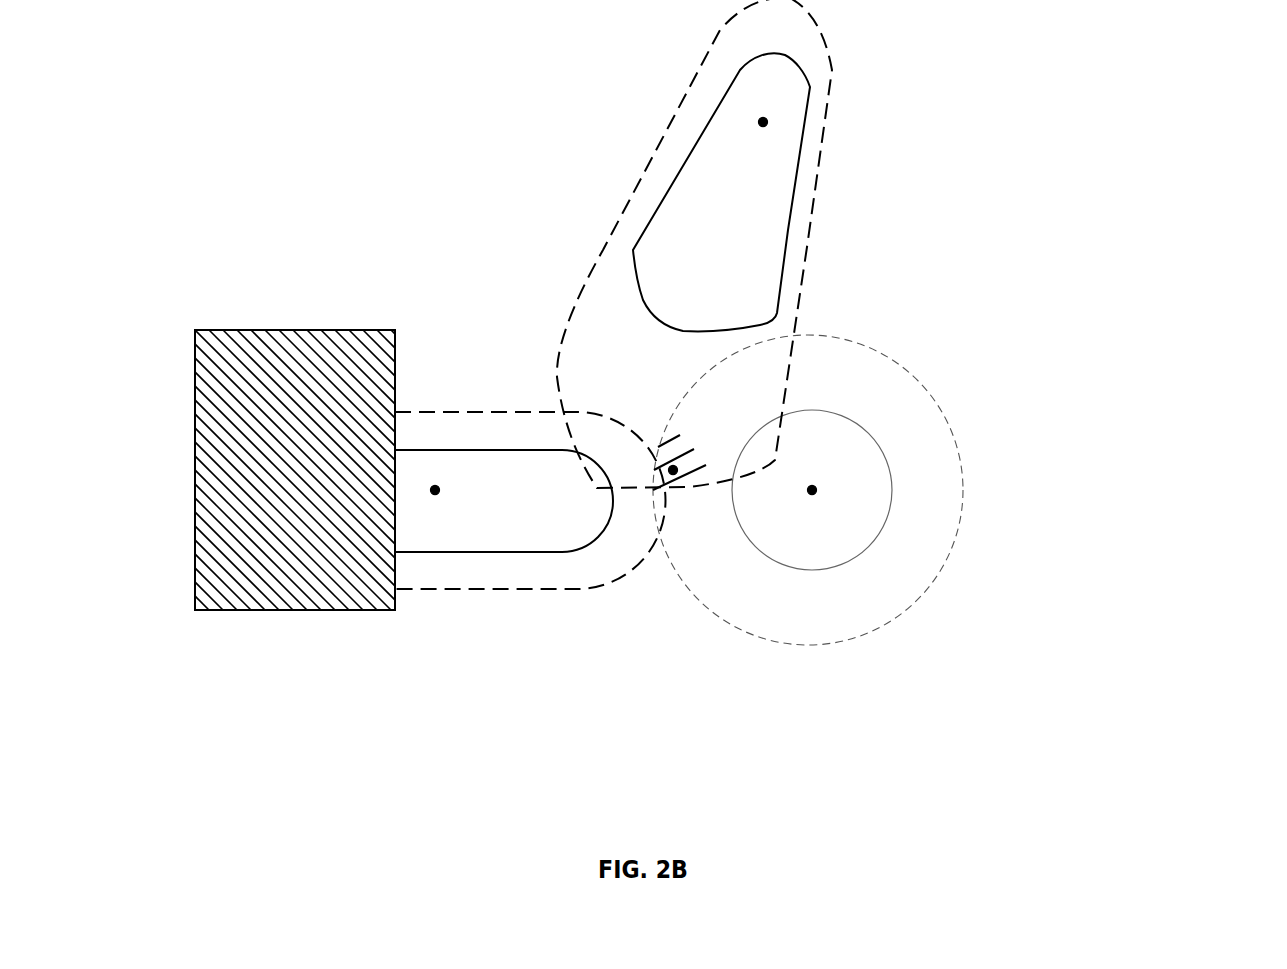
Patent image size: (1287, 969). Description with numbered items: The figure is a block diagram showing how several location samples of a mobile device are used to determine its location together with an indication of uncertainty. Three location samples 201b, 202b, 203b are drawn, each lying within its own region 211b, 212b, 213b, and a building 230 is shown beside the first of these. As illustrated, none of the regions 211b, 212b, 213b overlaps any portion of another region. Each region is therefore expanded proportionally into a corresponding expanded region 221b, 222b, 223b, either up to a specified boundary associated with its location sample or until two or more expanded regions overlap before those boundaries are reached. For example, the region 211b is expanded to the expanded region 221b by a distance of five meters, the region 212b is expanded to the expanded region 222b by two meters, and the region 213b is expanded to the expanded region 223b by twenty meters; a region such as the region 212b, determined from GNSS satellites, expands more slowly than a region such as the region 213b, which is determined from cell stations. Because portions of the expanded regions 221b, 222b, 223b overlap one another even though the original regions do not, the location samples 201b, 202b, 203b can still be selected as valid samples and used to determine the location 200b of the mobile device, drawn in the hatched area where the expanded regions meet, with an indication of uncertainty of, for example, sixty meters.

The building 230 is at (235, 330).
The region 211b is at (417, 450).
The expanded region 221b is at (578, 589).
The location sample 201b is at (435, 490).
The expanded region 222b is at (948, 428).
The region 212b is at (885, 523).
The location sample 202b is at (812, 490).
The region 213b is at (802, 165).
The expanded region 223b is at (807, 240).
The location sample 203b is at (763, 122).
The location 200b is at (673, 470).